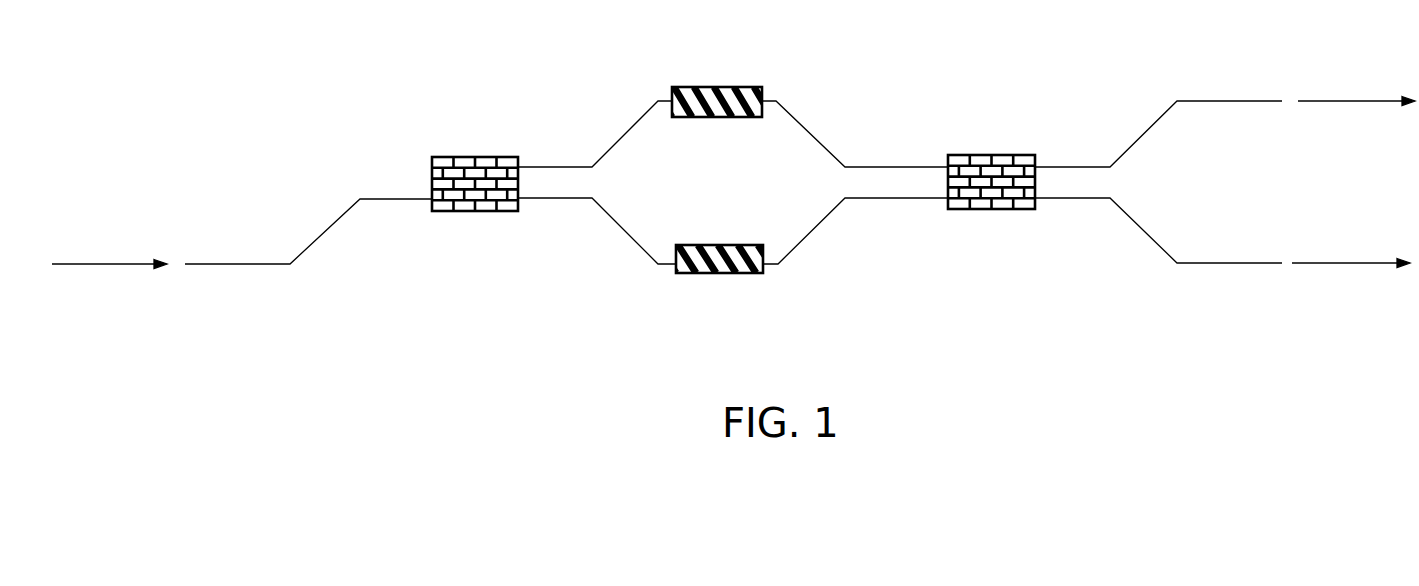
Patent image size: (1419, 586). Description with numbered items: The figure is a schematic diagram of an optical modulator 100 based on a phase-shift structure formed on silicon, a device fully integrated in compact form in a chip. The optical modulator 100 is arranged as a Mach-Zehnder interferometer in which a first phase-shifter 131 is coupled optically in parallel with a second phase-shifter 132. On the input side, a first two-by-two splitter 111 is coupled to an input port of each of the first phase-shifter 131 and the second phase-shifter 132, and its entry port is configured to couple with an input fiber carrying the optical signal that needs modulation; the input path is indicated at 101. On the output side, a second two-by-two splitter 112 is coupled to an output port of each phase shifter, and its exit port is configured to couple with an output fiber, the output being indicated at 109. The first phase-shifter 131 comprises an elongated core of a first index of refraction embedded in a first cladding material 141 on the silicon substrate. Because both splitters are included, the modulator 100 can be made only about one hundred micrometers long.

The optical modulator 100 is at (767, 20).
The input waveguide 101 is at (240, 264).
The first 2×2 splitter 111 is at (478, 155).
The second 2×2 splitter 112 is at (995, 157).
The first phase-shifter 131 is at (693, 87).
The second phase-shifter 132 is at (720, 275).
The first cladding material 141 is at (880, 271).
The output waveguide (bar port) 109 is at (1202, 263).